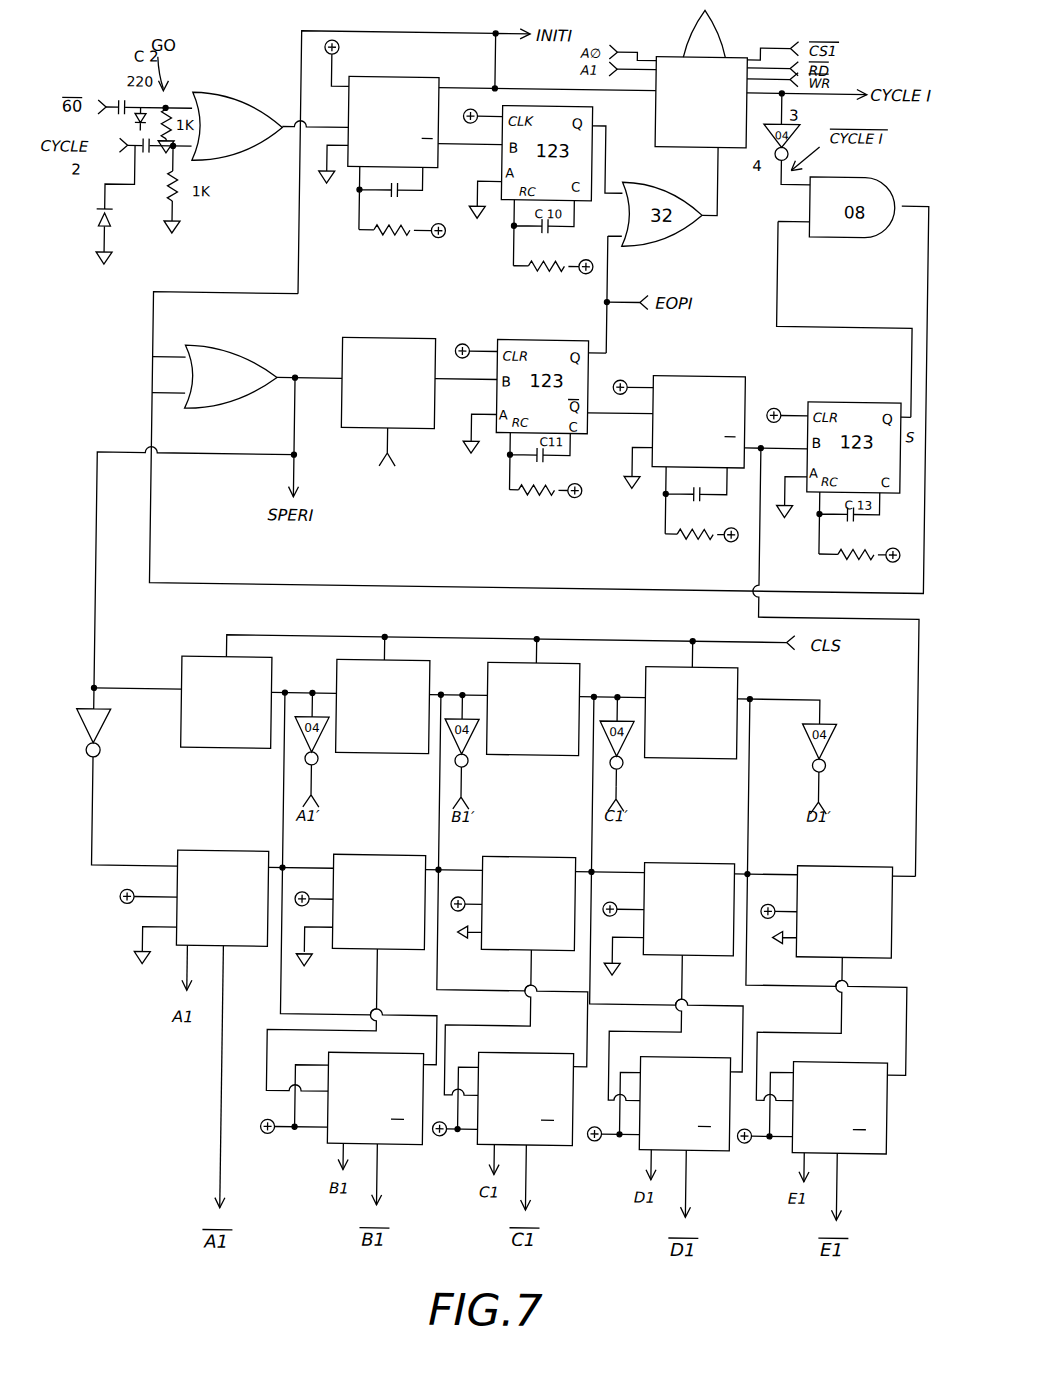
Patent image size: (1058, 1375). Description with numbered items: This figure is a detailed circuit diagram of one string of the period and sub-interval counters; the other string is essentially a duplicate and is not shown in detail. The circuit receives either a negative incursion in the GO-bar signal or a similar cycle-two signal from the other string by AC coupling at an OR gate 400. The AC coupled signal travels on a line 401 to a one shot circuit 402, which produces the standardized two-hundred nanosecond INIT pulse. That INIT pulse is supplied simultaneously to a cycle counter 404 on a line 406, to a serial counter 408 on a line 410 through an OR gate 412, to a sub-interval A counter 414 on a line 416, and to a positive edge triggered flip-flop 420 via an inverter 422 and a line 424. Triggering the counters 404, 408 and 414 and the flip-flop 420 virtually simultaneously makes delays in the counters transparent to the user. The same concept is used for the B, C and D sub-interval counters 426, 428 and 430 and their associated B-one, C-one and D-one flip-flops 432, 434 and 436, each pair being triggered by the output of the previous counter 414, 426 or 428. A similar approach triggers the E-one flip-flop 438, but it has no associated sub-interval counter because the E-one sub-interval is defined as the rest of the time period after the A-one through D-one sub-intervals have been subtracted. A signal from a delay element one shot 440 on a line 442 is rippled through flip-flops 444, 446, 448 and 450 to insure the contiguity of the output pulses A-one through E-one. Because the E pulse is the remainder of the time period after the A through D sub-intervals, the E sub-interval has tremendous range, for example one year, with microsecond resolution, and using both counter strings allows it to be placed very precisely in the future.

The OR gate 400 is at (236, 98).
The line 401 is at (292, 150).
The one shot circuit 402 is at (390, 79).
The cycle counter 404 is at (668, 53).
The line 406 is at (533, 89).
The serial counter 408 is at (374, 340).
The line 410 is at (391, 3).
The OR gate 412 is at (257, 352).
The sub-interval A counter 414 is at (272, 661).
The line 416 is at (95, 579).
The positive edge triggered flip-flop 420 is at (221, 855).
The inverter 422 is at (85, 748).
The line 424 is at (95, 805).
The B sub-interval counter 426 is at (430, 663).
The C sub-interval counter 428 is at (580, 663).
The D sub-interval counter 430 is at (738, 665).
The B1 flip-flop 432 is at (414, 1146).
The C1 flip-flop 434 is at (566, 1145).
The D1 flip-flop 436 is at (724, 1148).
The E1 flip-flop 438 is at (876, 1149).
The delay element one shot 440 is at (722, 344).
The line 442 is at (918, 766).
The flip-flop 444 is at (825, 862).
The flip-flop 446 is at (689, 861).
The flip-flop 448 is at (521, 857).
The flip-flop 450 is at (379, 857).